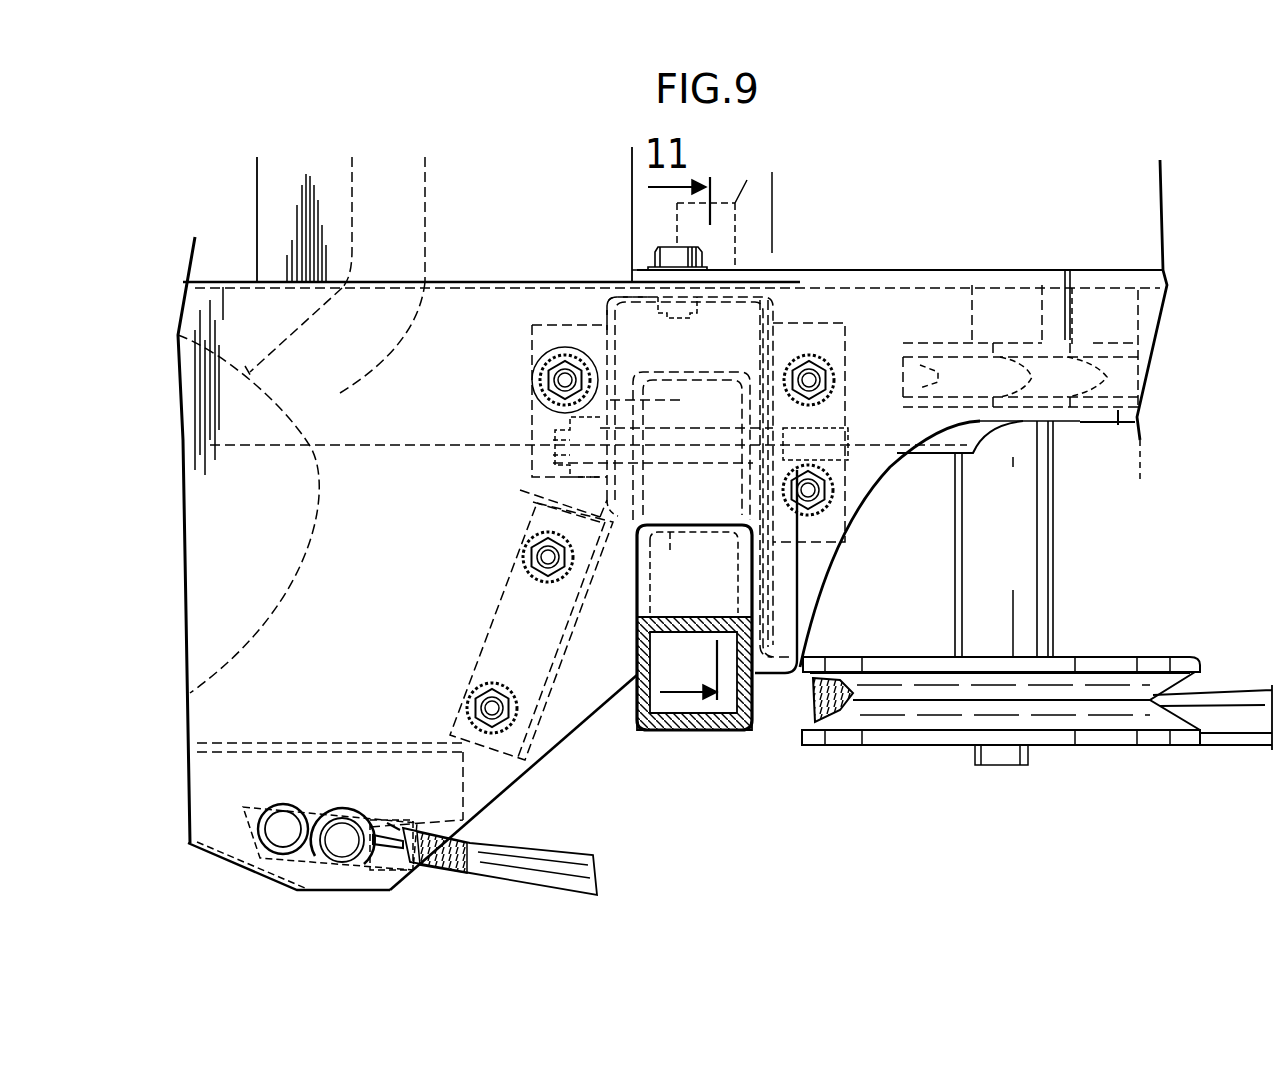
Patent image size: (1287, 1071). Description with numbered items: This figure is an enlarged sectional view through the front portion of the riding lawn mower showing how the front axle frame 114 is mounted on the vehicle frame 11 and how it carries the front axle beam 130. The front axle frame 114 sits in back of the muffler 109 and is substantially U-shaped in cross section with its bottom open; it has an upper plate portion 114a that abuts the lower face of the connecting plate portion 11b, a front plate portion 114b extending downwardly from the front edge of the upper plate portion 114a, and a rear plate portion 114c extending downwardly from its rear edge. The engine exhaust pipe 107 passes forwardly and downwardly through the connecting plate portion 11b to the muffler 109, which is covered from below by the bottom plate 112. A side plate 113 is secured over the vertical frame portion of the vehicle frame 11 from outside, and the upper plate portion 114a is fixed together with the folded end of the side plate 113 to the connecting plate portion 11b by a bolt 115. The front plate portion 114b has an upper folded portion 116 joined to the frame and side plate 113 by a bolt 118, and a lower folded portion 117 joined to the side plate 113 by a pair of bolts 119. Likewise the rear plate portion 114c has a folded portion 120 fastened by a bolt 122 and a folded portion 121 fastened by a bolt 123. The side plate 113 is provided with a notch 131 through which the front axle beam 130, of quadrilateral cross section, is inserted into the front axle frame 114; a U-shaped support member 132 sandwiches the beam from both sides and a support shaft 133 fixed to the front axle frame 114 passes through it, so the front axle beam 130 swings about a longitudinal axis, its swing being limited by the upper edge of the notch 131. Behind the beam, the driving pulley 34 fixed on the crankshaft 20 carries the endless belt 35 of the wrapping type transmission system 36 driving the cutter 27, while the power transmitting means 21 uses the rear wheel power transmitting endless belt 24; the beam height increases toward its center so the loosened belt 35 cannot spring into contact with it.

The vehicle frame 11 is at (957, 272).
The connecting plate portion 11b is at (1017, 283).
The crankshaft 20 is at (1043, 537).
The power transmitting means 21 is at (1118, 412).
The rear wheel power transmitting endless belt 24 is at (1130, 353).
The cutter 27 is at (550, 850).
The driving pulley 34 is at (918, 747).
The endless belt 35 is at (1240, 697).
The wrapping type transmission system 36 is at (1228, 750).
The exhaust pipe 107 is at (342, 395).
The muffler 109 is at (313, 517).
The bottom plate 112 is at (340, 740).
The side plate 113 is at (580, 723).
The front axle frame 114 is at (717, 451).
The upper plate portion 114a is at (625, 290).
The front plate portion 114b is at (560, 502).
The rear plate portion 114c is at (830, 552).
The bolt 115 is at (702, 257).
The folded portion 116 is at (543, 340).
The folded portion 117 is at (480, 642).
The bolt 118 is at (565, 380).
The bolt 119 is at (497, 710).
The folded portion 120 is at (847, 347).
The folded portion 121 is at (867, 477).
The bolt 122 is at (813, 389).
The bolt 123 is at (833, 500).
The front axle beam 130 is at (723, 730).
The notch 131 is at (715, 532).
The support member 132 is at (670, 370).
The support shaft 133 is at (670, 553).